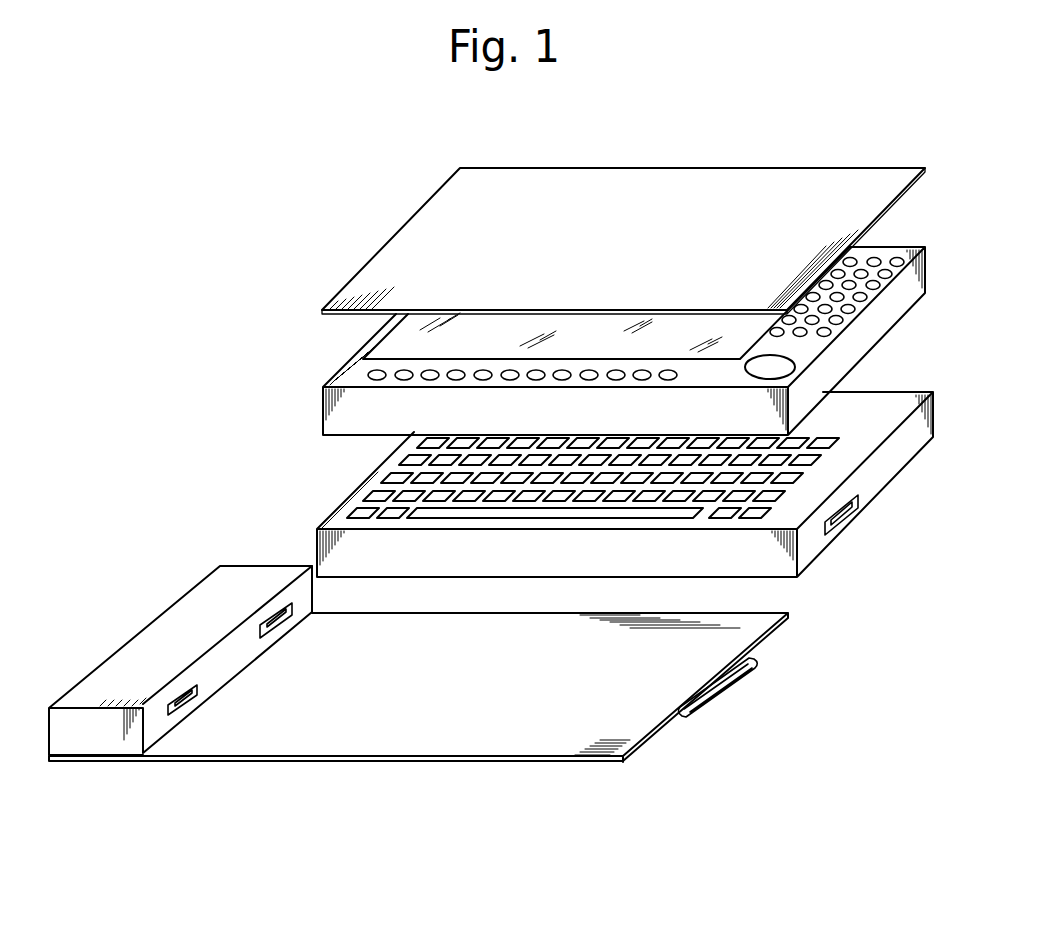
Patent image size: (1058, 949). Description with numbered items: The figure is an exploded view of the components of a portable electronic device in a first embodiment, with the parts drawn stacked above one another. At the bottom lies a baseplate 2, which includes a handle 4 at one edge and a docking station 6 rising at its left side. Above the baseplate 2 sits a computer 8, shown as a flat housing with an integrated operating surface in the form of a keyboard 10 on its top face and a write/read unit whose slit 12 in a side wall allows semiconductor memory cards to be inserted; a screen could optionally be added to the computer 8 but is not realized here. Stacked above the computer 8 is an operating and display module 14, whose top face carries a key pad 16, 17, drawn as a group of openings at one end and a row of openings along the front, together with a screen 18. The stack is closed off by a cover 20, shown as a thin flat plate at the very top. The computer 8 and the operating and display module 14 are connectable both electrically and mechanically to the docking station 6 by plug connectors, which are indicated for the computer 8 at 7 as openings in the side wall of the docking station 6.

The baseplate 2 is at (497, 768).
The handle 4 is at (735, 686).
The docking station 6 is at (167, 638).
The plug connectors 7 is at (270, 632).
The computer 8 is at (910, 386).
The operating surface (keyboard) 10 is at (380, 497).
The slit 12 is at (850, 513).
The operating and display module 14 is at (318, 404).
The key pad 16 is at (878, 260).
The key pad 17 is at (373, 372).
The screen 18 is at (410, 340).
The cover 20 is at (672, 197).